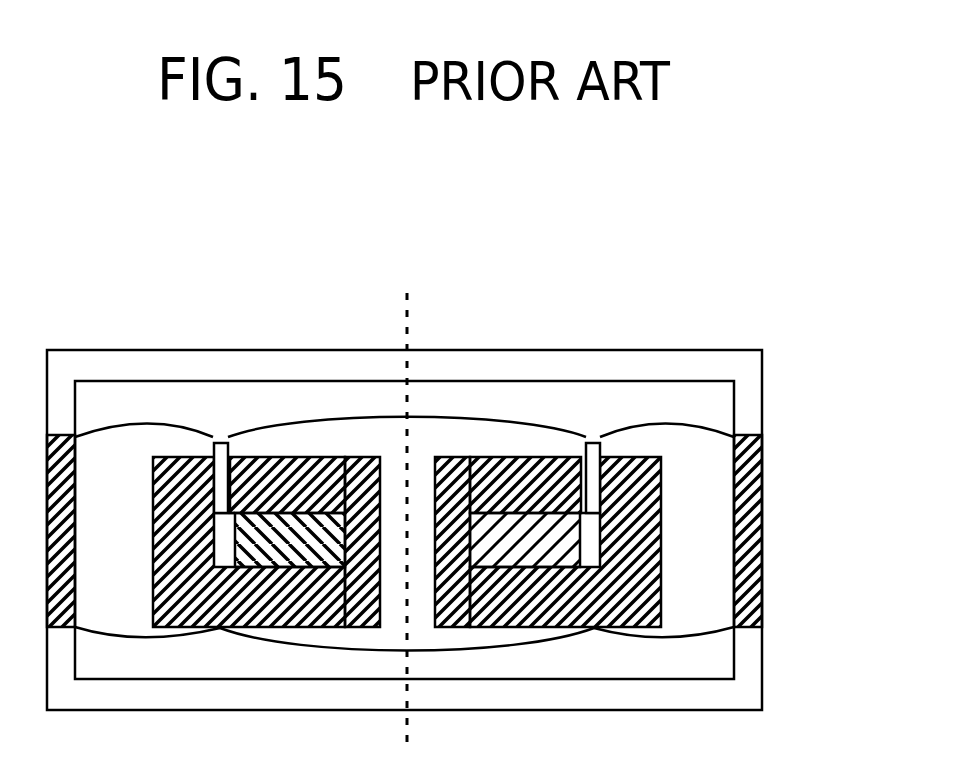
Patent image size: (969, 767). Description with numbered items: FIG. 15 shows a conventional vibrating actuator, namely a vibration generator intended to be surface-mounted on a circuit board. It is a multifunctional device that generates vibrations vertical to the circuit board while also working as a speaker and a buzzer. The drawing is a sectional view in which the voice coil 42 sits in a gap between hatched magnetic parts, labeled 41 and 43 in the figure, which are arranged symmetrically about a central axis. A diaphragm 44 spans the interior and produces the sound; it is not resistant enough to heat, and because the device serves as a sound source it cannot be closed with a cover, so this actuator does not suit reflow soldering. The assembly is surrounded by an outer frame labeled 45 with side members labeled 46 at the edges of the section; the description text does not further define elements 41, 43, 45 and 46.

The magnet 41 is at (535, 460).
The voice coil 42 is at (600, 450).
The pole piece 43 is at (268, 520).
The diaphragm 44 is at (485, 422).
The housing 45 is at (735, 372).
The ring spacer 46 is at (763, 447).